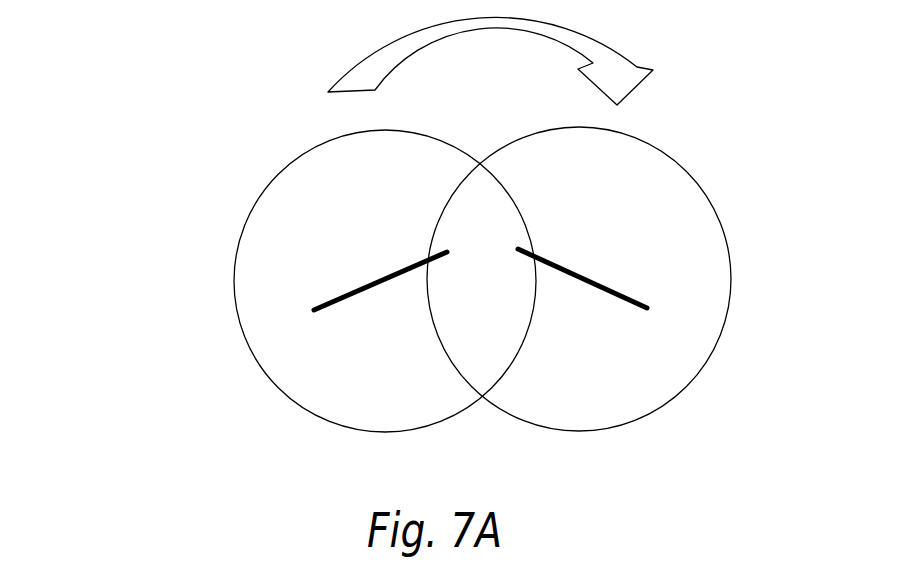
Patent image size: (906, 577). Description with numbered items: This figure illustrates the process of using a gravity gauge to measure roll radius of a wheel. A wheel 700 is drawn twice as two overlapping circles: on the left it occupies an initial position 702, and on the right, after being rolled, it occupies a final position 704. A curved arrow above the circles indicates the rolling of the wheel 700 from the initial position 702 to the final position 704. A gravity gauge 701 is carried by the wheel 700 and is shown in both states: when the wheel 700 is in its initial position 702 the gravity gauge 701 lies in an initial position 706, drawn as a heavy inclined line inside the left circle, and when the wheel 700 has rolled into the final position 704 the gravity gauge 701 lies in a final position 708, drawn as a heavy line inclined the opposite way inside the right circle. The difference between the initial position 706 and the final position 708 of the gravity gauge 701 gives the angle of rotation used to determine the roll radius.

The wheel 700 is at (200, 300).
The gravity gauge 701 is at (557, 260).
The initial position of wheel 702 is at (253, 197).
The final position of wheel 704 is at (707, 188).
The initial position of gravity gauge 706 is at (355, 293).
The final position of gravity gauge 708 is at (620, 290).